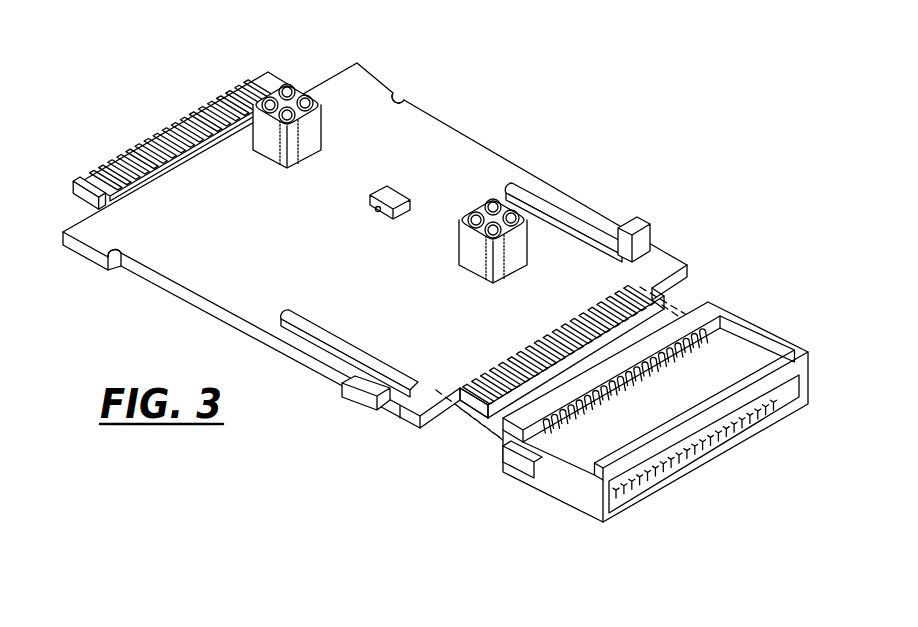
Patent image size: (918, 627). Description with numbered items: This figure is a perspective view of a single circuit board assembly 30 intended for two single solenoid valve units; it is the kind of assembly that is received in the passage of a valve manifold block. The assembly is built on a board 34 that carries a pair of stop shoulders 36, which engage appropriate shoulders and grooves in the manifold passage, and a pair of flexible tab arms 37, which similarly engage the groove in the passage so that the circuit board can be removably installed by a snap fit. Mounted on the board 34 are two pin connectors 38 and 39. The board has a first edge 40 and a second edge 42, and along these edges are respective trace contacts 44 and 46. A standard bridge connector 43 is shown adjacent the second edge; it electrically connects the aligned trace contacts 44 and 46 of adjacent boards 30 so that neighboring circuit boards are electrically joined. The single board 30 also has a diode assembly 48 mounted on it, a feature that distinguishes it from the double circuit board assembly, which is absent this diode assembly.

The single circuit board assembly 30 is at (462, 152).
The board 34 is at (283, 250).
The stop shoulders 36 is at (388, 82).
The flexible tab arms 37 is at (597, 210).
The pin connector 38 is at (316, 130).
The pin connector 39 is at (524, 240).
The first edge 40 is at (80, 179).
The second edge 42 is at (460, 400).
The bridge connector 43 is at (762, 355).
The trace contacts 44 is at (264, 79).
The trace contacts 46 is at (507, 358).
The diode assembly 48 is at (392, 198).